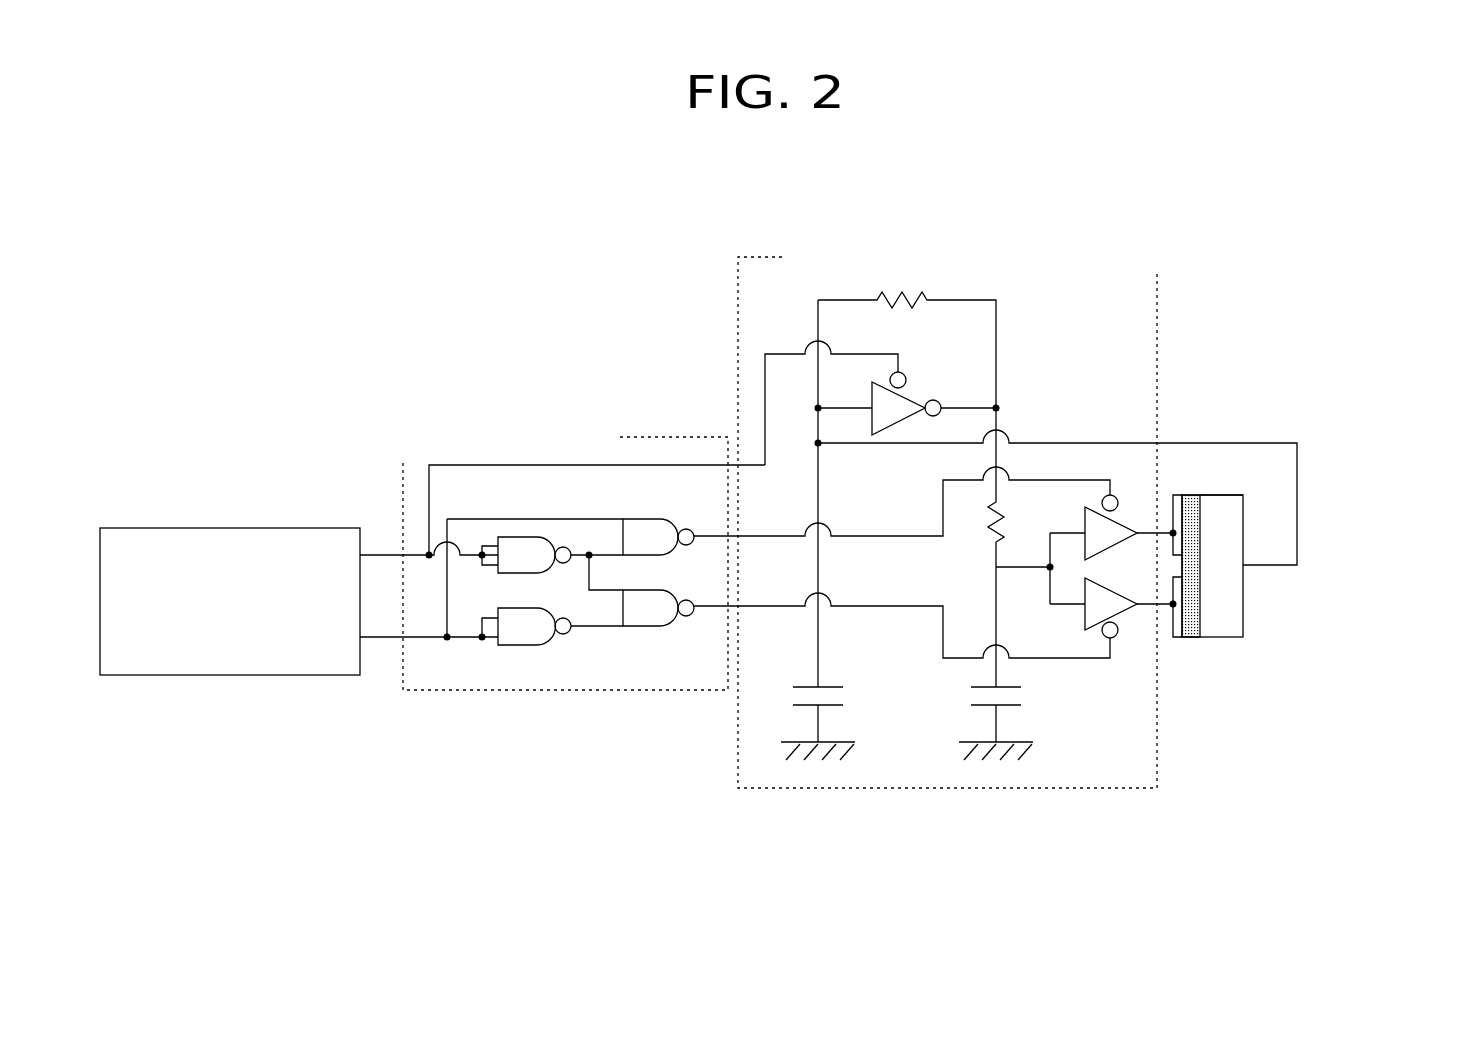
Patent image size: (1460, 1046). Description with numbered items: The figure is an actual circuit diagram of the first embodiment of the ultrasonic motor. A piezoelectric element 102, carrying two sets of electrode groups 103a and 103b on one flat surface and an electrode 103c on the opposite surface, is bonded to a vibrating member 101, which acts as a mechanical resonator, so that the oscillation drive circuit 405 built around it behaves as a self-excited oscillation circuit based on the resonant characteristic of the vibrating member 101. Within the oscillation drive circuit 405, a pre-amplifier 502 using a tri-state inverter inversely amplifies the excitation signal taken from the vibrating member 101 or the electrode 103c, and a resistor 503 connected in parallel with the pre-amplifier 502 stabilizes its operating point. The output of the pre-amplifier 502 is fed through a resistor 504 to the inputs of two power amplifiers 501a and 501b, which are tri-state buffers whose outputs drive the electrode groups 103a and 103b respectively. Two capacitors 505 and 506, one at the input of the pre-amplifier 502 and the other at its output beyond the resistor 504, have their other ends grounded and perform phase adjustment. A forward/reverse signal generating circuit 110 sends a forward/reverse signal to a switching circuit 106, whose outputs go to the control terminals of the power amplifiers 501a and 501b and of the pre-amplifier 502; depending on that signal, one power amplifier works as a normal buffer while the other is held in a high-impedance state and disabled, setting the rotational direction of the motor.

The forward/reverse signal generating circuit 110 is at (172, 532).
The switching circuit 106 is at (561, 534).
The oscillation drive circuit 405 is at (982, 526).
The resistor 503 is at (922, 298).
The pre-amplifier 502 is at (902, 405).
The resistor 504 is at (997, 540).
The capacitor 505 is at (803, 708).
The capacitor 506 is at (983, 708).
The power amplifier 501a is at (1112, 532).
The power amplifier 501b is at (1115, 622).
The vibrating member 101 is at (1235, 610).
The piezoelectric element 102 is at (1192, 548).
The electrode group 103a is at (1173, 495).
The electrode group 103b is at (1172, 632).
The electrode 103c is at (1225, 494).